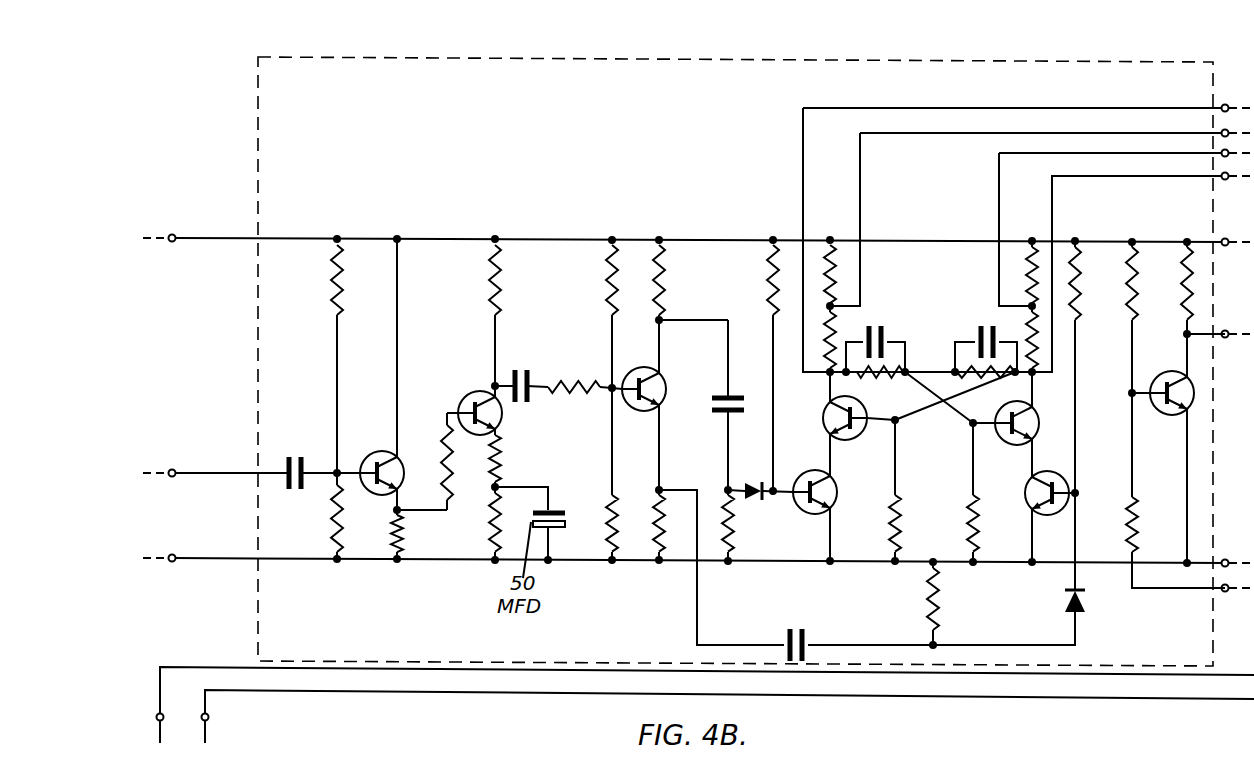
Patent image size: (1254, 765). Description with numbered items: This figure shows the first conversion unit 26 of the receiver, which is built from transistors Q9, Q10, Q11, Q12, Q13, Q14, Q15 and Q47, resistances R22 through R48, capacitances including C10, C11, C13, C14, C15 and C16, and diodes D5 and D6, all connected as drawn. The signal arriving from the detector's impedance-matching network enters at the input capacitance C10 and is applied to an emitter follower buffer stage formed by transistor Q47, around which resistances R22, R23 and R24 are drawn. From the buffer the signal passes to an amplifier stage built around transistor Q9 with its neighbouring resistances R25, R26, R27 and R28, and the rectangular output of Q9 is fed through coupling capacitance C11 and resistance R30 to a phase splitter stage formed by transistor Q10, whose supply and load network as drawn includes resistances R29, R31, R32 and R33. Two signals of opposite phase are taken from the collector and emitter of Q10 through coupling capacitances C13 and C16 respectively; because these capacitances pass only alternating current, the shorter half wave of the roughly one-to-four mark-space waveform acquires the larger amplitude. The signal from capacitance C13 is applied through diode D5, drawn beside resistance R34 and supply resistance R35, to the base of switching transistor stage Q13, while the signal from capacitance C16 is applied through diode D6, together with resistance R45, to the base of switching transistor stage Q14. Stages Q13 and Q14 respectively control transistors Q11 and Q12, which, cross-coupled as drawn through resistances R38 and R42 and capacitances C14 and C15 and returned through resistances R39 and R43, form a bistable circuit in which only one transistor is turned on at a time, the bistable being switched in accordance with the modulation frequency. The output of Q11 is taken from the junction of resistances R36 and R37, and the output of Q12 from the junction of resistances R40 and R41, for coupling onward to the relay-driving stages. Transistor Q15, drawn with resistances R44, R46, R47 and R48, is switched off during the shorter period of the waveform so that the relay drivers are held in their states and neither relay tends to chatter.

The first conversion unit 26 is at (732, 346).
The resistance R22 is at (340, 256).
The resistance R23 is at (336, 545).
The resistance R24 is at (394, 552).
The resistance R25 is at (496, 250).
The resistance R26 is at (444, 487).
The resistance R27 is at (490, 458).
The resistance R28 is at (489, 542).
The resistance R29 is at (610, 250).
The resistance R30 is at (572, 397).
The resistance R31 is at (609, 548).
The resistance R32 is at (661, 252).
The resistance R33 is at (656, 540).
The resistance R34 is at (727, 540).
The resistance R35 is at (775, 252).
The resistance R36 is at (827, 262).
The resistance R37 is at (822, 355).
The resistance R38 is at (858, 380).
The resistance R39 is at (892, 543).
The resistance R40 is at (1028, 252).
The resistance R41 is at (1038, 348).
The resistance R42 is at (963, 380).
The resistance R43 is at (970, 502).
The resistance R44 is at (1074, 300).
The resistance R45 is at (940, 590).
The resistance R46 is at (1128, 288).
The resistance R47 is at (1136, 516).
The resistance R48 is at (1184, 288).
The capacitance C10 is at (283, 485).
The coupling capacitance C11 is at (528, 397).
The coupling capacitance C13 is at (742, 396).
The capacitance C14 is at (885, 333).
The capacitance C15 is at (992, 330).
The coupling capacitance C16 is at (785, 640).
The emitter follower transistor buffer stage Q47 is at (383, 441).
The amplifier transistor stage Q9 is at (468, 392).
The phase splitter stage Q10 is at (664, 386).
The transistor Q11 is at (823, 420).
The transistor Q12 is at (1006, 443).
The switching transistor stage Q13 is at (801, 473).
The switching transistor stage Q14 is at (1072, 480).
The transistor stage Q15 is at (1160, 415).
The diode D5 is at (752, 486).
The diode D6 is at (1088, 601).